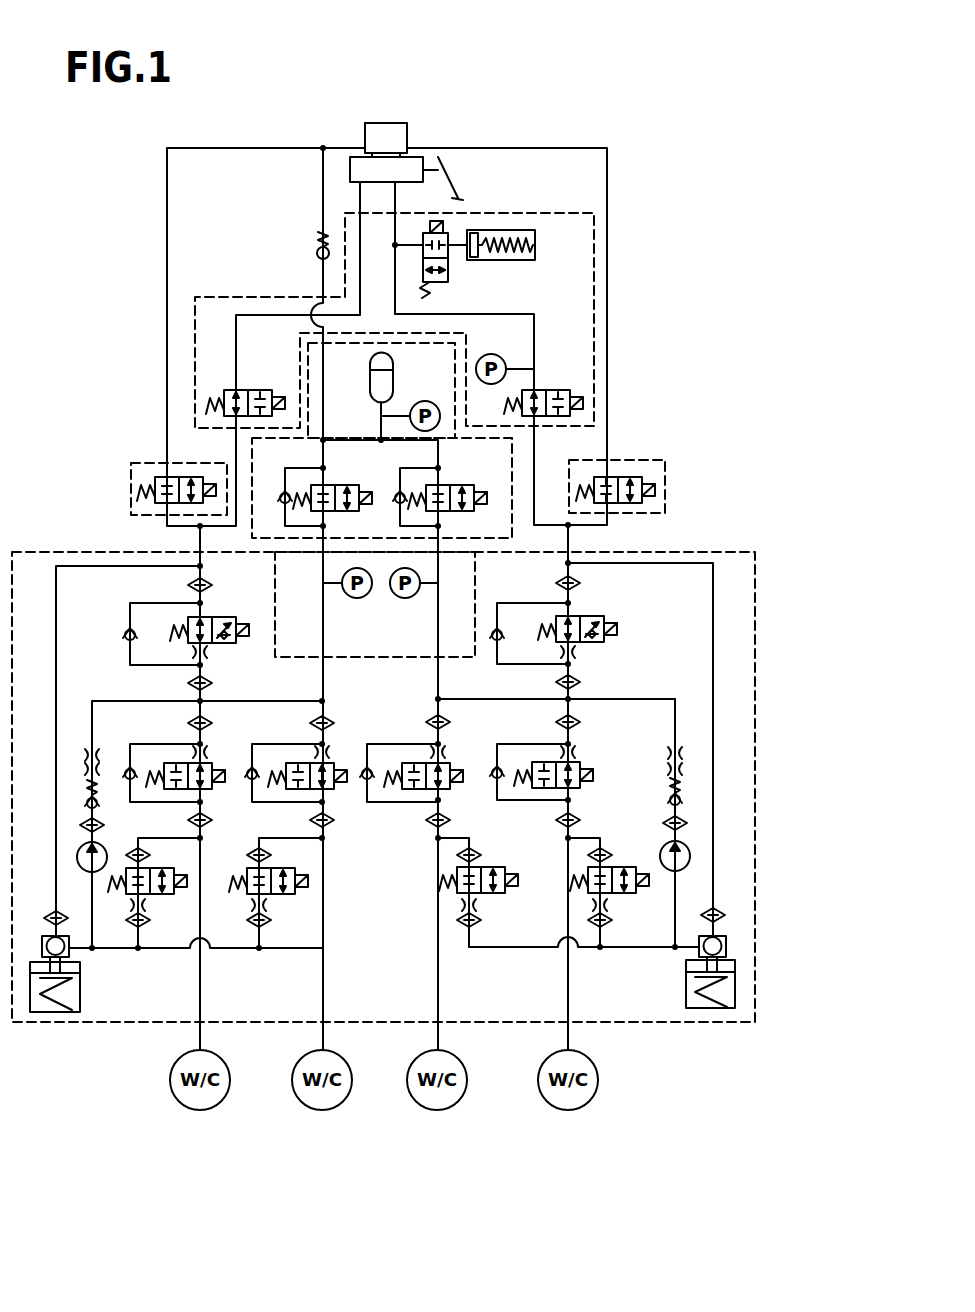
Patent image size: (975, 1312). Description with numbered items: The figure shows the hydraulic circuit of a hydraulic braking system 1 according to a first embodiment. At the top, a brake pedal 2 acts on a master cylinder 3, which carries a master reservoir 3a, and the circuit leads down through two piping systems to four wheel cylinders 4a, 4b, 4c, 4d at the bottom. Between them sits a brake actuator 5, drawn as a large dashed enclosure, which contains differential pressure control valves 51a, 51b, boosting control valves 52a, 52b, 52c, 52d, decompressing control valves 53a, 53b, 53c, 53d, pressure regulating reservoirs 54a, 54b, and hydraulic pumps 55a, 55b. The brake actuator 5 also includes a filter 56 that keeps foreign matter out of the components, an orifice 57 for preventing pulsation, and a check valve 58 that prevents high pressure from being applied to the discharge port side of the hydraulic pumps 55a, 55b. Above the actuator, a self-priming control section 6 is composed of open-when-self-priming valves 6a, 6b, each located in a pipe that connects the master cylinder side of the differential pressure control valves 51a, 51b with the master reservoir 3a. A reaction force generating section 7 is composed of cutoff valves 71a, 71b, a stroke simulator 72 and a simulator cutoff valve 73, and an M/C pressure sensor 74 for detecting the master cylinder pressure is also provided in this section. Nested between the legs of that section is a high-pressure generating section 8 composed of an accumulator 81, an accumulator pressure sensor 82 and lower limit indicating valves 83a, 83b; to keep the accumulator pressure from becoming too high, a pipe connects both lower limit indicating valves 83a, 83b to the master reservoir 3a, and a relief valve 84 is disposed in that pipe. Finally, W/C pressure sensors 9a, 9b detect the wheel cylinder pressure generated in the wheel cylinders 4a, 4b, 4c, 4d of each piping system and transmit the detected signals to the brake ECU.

The hydraulic braking system 1 is at (590, 110).
The brake pedal 2 is at (457, 196).
The master cylinder 3 is at (417, 156).
The master reservoir 3a is at (385, 123).
The wheel cylinder 4a is at (200, 1110).
The wheel cylinder 4b is at (322, 1110).
The wheel cylinder 4c is at (437, 1110).
The wheel cylinder 4d is at (568, 1110).
The brake actuator 5 is at (722, 552).
The self-priming control section 6 is at (131, 480).
The open-when-self-priming valve 6a is at (160, 477).
The open-when-self-priming valve 6b is at (632, 475).
The reaction force generating section 7 is at (553, 213).
The cutoff valve 71a is at (255, 390).
The cutoff valve 71b is at (552, 390).
The stroke simulator 72 is at (518, 262).
The simulator cutoff valve 73 is at (455, 275).
The M/C pressure sensor 74 is at (500, 354).
The high-pressure generating section 8 is at (298, 552).
The accumulator 81 is at (368, 380).
The accumulator pressure sensor 82 is at (430, 400).
The lower limit indicating valve 83a is at (340, 486).
The lower limit indicating valve 83b is at (455, 486).
The relief valve 84 is at (317, 252).
The W/C pressure sensor 9a is at (352, 598).
The W/C pressure sensor 9b is at (408, 598).
The differential pressure control valve 51a is at (225, 617).
The differential pressure control valve 51b is at (592, 616).
The boosting control valve 52a is at (176, 763).
The boosting control valve 52b is at (297, 763).
The boosting control valve 52c is at (413, 763).
The boosting control valve 52d is at (543, 762).
The decompressing control valve 53a is at (157, 895).
The decompressing control valve 53b is at (279, 895).
The decompressing control valve 53c is at (492, 893).
The decompressing control valve 53d is at (623, 893).
The pressure regulating reservoir 54a is at (80, 988).
The pressure regulating reservoir 54b is at (686, 988).
The hydraulic pump 55a is at (104, 850).
The hydraulic pump 55b is at (668, 848).
The filter 56 is at (719, 915).
The orifice 57 is at (681, 752).
The check valve 58 is at (666, 797).